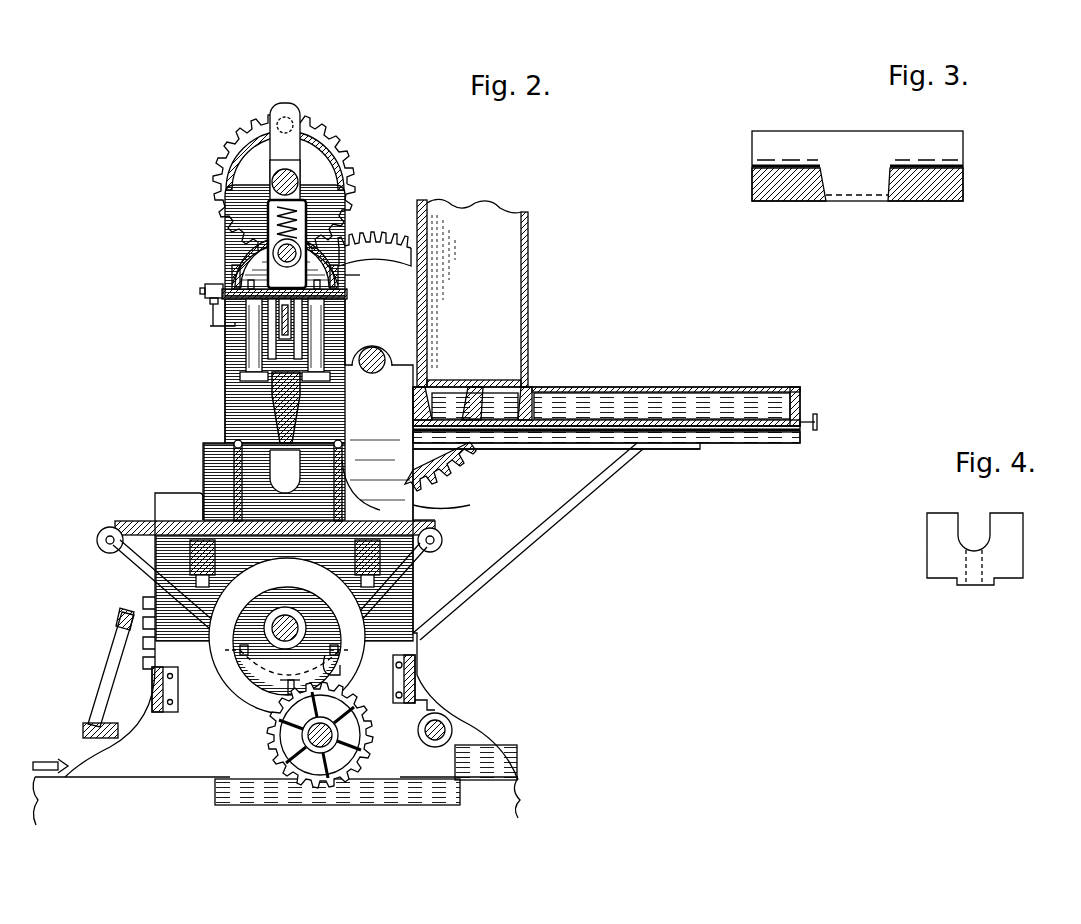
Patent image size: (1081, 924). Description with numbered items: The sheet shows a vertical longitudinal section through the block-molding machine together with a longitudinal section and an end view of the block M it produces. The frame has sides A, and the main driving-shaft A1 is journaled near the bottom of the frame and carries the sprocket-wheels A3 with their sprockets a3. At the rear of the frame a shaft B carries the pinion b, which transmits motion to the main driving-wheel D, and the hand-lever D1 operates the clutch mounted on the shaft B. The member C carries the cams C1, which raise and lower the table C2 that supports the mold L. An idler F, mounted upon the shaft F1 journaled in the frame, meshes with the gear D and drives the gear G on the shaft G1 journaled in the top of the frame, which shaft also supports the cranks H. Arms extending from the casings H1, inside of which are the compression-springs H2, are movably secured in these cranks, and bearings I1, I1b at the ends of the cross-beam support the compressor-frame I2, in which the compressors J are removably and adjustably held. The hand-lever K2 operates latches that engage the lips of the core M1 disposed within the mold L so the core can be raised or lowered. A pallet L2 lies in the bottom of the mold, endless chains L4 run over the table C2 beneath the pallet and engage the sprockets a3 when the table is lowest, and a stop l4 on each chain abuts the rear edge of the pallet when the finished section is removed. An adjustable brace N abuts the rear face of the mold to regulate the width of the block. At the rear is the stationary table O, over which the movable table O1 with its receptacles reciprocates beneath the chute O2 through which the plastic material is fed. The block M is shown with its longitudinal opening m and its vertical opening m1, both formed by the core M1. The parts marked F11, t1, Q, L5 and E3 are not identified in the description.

In FIG. 2, the cranks H is at (216, 150).
In FIG. 2, the casing H1 is at (222, 207).
In FIG. 2, the compression-spring H2 is at (346, 200).
In FIG. 2, the shaft G1 is at (300, 165).
In FIG. 2, the gear G is at (352, 190).
In FIG. 2, the bearing I1 is at (225, 252).
In FIG. 2, the spring frame pivot I1b is at (350, 284).
In FIG. 2, the compressor-frame I2 is at (213, 305).
In FIG. 2, the compressors J is at (225, 283).
In FIG. 2, the hand-lever K2 is at (218, 327).
In FIG. 2, the core M1 is at (275, 392).
In FIG. 2, the pivot pin F11 is at (370, 378).
In FIG. 2, the idler F is at (396, 235).
In FIG. 2, the shaft F1 is at (470, 455).
In FIG. 2, the toothed sector t1 is at (452, 472).
In FIG. 2, the chute O2 is at (503, 247).
In FIG. 2, the frame sides A is at (425, 382).
In FIG. 2, the movable table O1 is at (470, 398).
In FIG. 2, the stationary table O is at (645, 437).
In FIG. 2, the rod Q is at (816, 432).
In FIG. 2, the strut L5 is at (470, 565).
In FIG. 2, the endless chains L4 is at (465, 540).
In FIG. 2, the pallet L2 is at (234, 450).
In FIG. 2, the mold L is at (240, 473).
In FIG. 2, the block M is at (265, 455).
In FIG. 3, the block M is at (965, 181).
In FIG. 4, the block M is at (917, 562).
In FIG. 2, the table C2 is at (200, 545).
In FIG. 2, the driving-gear D is at (148, 600).
In FIG. 2, the cam wheel C is at (240, 660).
In FIG. 2, the cams C1 is at (462, 660).
In FIG. 2, the main driving-shaft A1 is at (302, 745).
In FIG. 2, the sprocket-wheels A3 is at (268, 695).
In FIG. 2, the sprockets a3 is at (355, 792).
In FIG. 2, the pinion b is at (435, 715).
In FIG. 2, the shaft B is at (445, 745).
In FIG. 2, the hand-lever D1 is at (115, 677).
In FIG. 2, the foot pin E3 is at (48, 760).
In FIG. 2, the brace N is at (440, 500).
In FIG. 2, the stop l4 is at (440, 520).
In FIG. 3, the longitudinal opening m is at (773, 148).
In FIG. 4, the longitudinal opening m is at (974, 526).
In FIG. 3, the vertical opening m1 is at (840, 198).
In FIG. 4, the vertical opening m1 is at (976, 575).